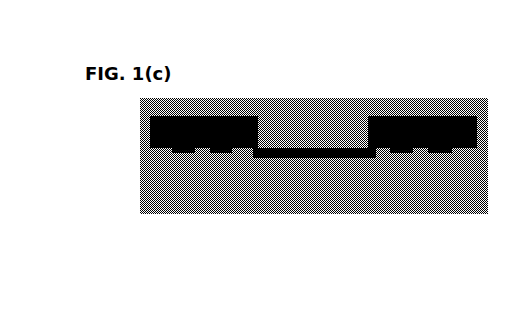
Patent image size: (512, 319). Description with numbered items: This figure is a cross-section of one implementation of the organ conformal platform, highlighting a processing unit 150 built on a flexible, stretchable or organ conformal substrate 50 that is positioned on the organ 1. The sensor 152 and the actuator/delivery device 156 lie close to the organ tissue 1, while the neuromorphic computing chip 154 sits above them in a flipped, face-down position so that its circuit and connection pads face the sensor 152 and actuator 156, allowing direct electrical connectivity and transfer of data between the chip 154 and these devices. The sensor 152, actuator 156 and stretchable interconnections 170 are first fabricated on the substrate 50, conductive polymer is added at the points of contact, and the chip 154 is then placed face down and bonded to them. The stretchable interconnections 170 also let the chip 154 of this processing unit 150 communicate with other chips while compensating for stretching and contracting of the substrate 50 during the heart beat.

The organ 1 is at (432, 183).
The substrate 50 is at (297, 116).
The processing unit 150 is at (390, 112).
The sensor 152 is at (180, 157).
The neuromorphic computing chip 154 is at (163, 135).
The actuator/delivery device 156 is at (220, 157).
The stretchable interconnections 170 is at (315, 158).